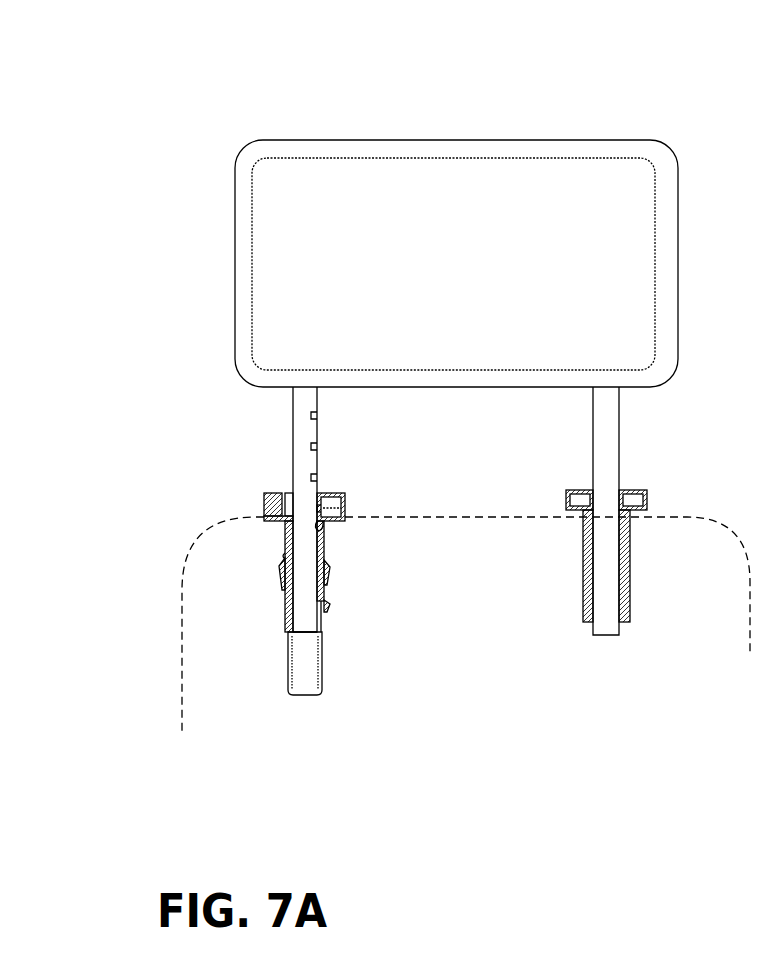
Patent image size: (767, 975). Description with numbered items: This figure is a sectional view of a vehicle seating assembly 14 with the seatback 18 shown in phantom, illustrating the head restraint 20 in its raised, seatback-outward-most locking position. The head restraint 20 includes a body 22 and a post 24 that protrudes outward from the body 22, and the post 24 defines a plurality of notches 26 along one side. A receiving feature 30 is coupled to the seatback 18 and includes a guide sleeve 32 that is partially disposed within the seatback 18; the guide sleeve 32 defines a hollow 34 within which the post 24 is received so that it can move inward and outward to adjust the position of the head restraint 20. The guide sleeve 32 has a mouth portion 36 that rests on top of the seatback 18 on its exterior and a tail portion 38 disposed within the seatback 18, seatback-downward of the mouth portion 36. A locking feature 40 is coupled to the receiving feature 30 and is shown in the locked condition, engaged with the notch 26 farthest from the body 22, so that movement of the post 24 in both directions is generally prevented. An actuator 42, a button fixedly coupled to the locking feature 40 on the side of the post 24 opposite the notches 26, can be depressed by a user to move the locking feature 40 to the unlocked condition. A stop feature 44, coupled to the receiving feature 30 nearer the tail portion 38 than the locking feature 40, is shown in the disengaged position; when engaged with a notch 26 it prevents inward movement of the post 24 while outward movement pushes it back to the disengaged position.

The seating assembly 14 is at (445, 322).
The seatback 18 is at (205, 657).
The head restraint 20 is at (486, 70).
The body 22 is at (430, 208).
The post 24 is at (290, 400).
The notches 26 is at (317, 478).
The receiving feature 30 is at (285, 530).
The guide sleeve 32 is at (287, 545).
The hollow 34 is at (305, 667).
The mouth portion 36 is at (283, 546).
The tail portion 38 is at (318, 695).
The locking feature 40 is at (341, 508).
The actuator 42 is at (265, 500).
The stop feature 44 is at (325, 604).